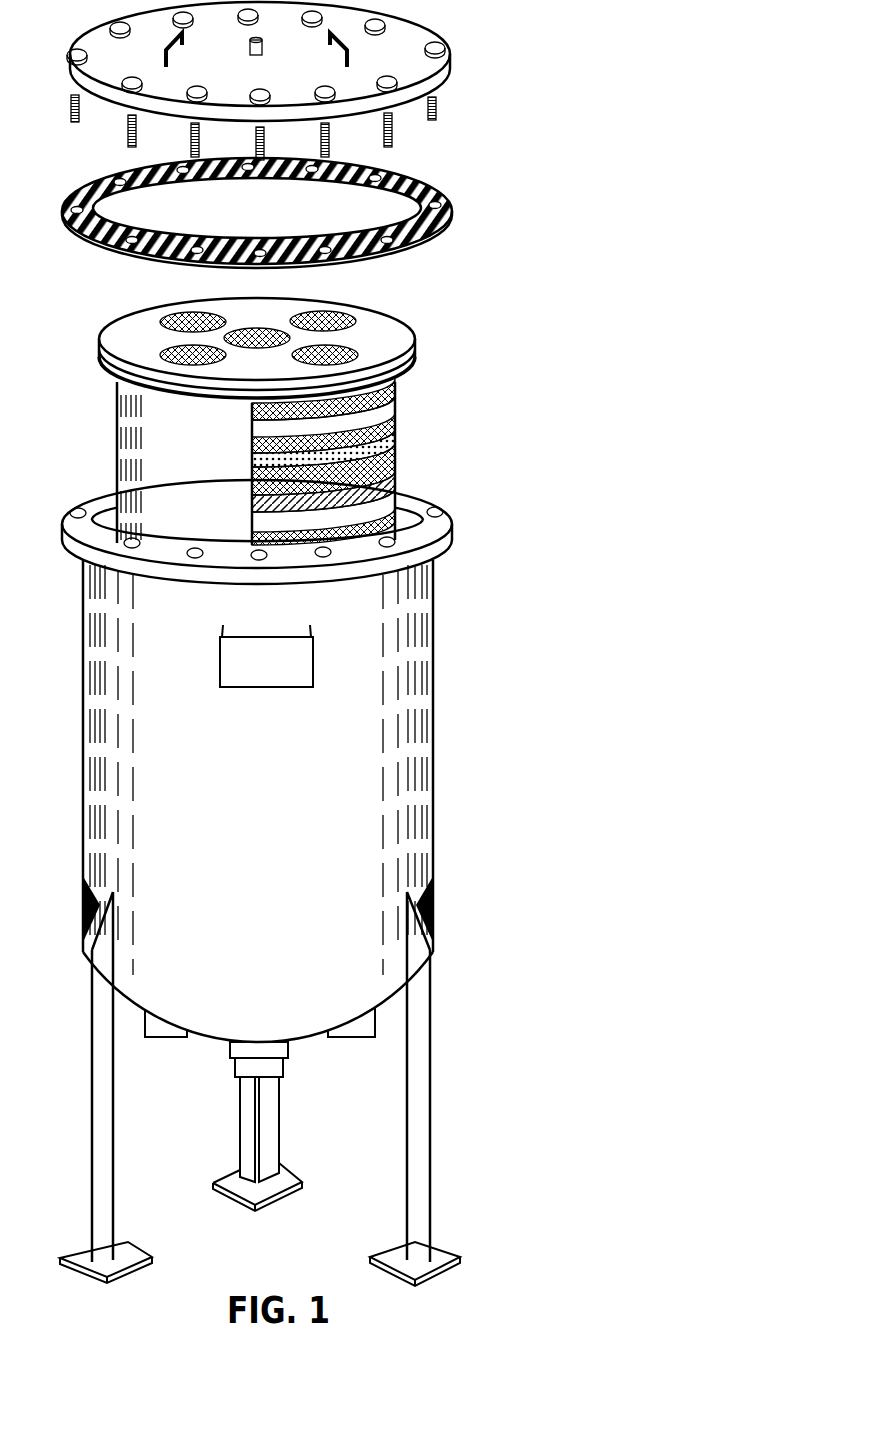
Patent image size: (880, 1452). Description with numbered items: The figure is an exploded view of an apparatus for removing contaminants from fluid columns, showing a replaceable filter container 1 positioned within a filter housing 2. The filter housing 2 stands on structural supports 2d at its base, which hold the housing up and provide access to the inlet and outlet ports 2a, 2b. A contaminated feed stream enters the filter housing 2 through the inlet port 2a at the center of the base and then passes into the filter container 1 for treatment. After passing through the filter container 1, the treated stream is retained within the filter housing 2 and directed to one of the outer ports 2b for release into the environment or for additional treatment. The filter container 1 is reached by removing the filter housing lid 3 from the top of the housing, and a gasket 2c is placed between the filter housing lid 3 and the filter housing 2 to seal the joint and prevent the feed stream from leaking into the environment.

The filter container 1 is at (479, 372).
The filter housing 2 is at (479, 579).
The inlet port 2a is at (233, 1073).
The outlet ports 2b is at (182, 1035).
The gasket 2c is at (479, 198).
The structural supports 2d is at (82, 1255).
The filter housing lid 3 is at (479, 51).